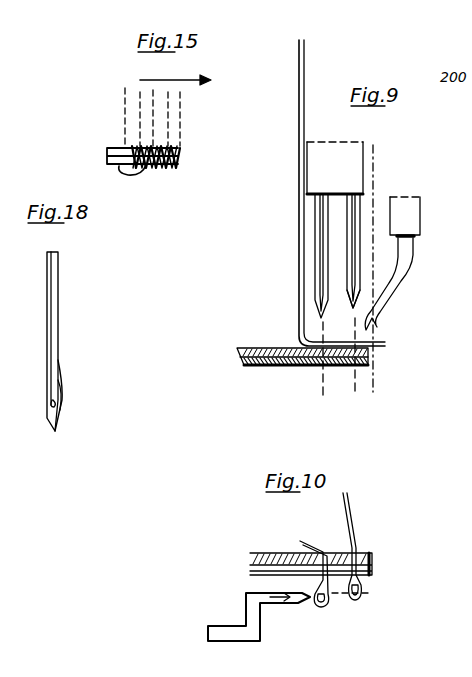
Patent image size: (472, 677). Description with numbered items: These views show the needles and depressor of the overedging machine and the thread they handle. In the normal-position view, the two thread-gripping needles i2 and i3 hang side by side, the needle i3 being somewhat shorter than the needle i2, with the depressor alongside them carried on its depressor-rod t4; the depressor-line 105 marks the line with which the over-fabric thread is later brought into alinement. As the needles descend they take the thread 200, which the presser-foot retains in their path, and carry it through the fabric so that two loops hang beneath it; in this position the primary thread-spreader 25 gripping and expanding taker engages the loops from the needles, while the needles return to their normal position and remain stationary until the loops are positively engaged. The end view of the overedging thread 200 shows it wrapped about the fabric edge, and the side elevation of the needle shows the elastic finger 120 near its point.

In FIG. 9, the thread 200 is at (301, 140).
In FIG. 10, the thread 200 is at (351, 518).
In FIG. 18, the thread-gripping needle i3 is at (52, 283).
In FIG. 9, the thread-gripping needle i3 is at (352, 231).
In FIG. 9, the thread-gripping needle i2 is at (318, 255).
In FIG. 18, the elastic finger 120 is at (64, 393).
In FIG. 9, the elastic finger 120 is at (356, 259).
In FIG. 9, the depressor-rod t4 is at (416, 214).
In FIG. 9, the depressor-line 105 is at (376, 355).
In FIG. 10, the primary thread-spreader 25 is at (271, 607).